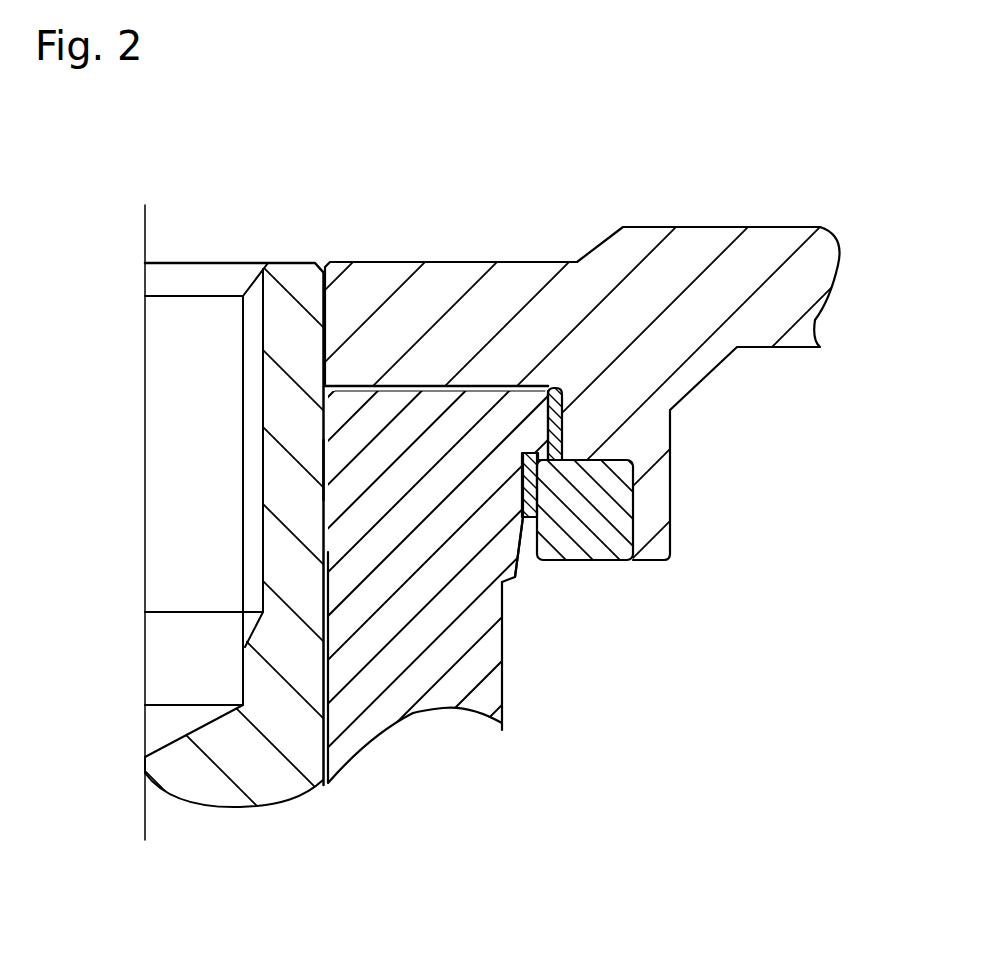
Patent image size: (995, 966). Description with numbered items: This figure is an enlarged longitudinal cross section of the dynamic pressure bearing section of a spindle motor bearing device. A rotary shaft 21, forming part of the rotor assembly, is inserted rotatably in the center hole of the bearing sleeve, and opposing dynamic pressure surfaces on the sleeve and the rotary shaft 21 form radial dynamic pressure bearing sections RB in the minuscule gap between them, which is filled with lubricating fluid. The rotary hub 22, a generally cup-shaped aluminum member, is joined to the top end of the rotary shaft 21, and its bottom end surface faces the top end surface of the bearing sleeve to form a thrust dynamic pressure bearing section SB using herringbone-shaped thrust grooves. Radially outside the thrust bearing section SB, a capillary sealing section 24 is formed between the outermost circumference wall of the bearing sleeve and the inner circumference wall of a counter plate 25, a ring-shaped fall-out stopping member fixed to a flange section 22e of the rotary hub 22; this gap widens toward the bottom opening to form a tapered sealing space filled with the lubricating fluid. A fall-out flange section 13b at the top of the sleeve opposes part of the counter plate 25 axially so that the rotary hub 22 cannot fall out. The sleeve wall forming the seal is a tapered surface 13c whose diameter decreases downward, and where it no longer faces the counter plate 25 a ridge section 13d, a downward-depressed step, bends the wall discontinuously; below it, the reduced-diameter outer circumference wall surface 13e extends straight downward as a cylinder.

The rotary shaft 21 is at (198, 258).
The rotary hub 22 is at (670, 228).
The flange section 22e is at (650, 512).
The thrust dynamic pressure bearing section SB is at (485, 387).
The radial dynamic pressure bearing section RB is at (318, 470).
The fall-out flange section 13b is at (553, 413).
The tapered surface 13c is at (522, 489).
The ridge section 13d is at (508, 575).
The outer circumference wall surface 13e is at (503, 658).
The capillary sealing section 24 is at (525, 520).
The counter plate 25 is at (600, 537).